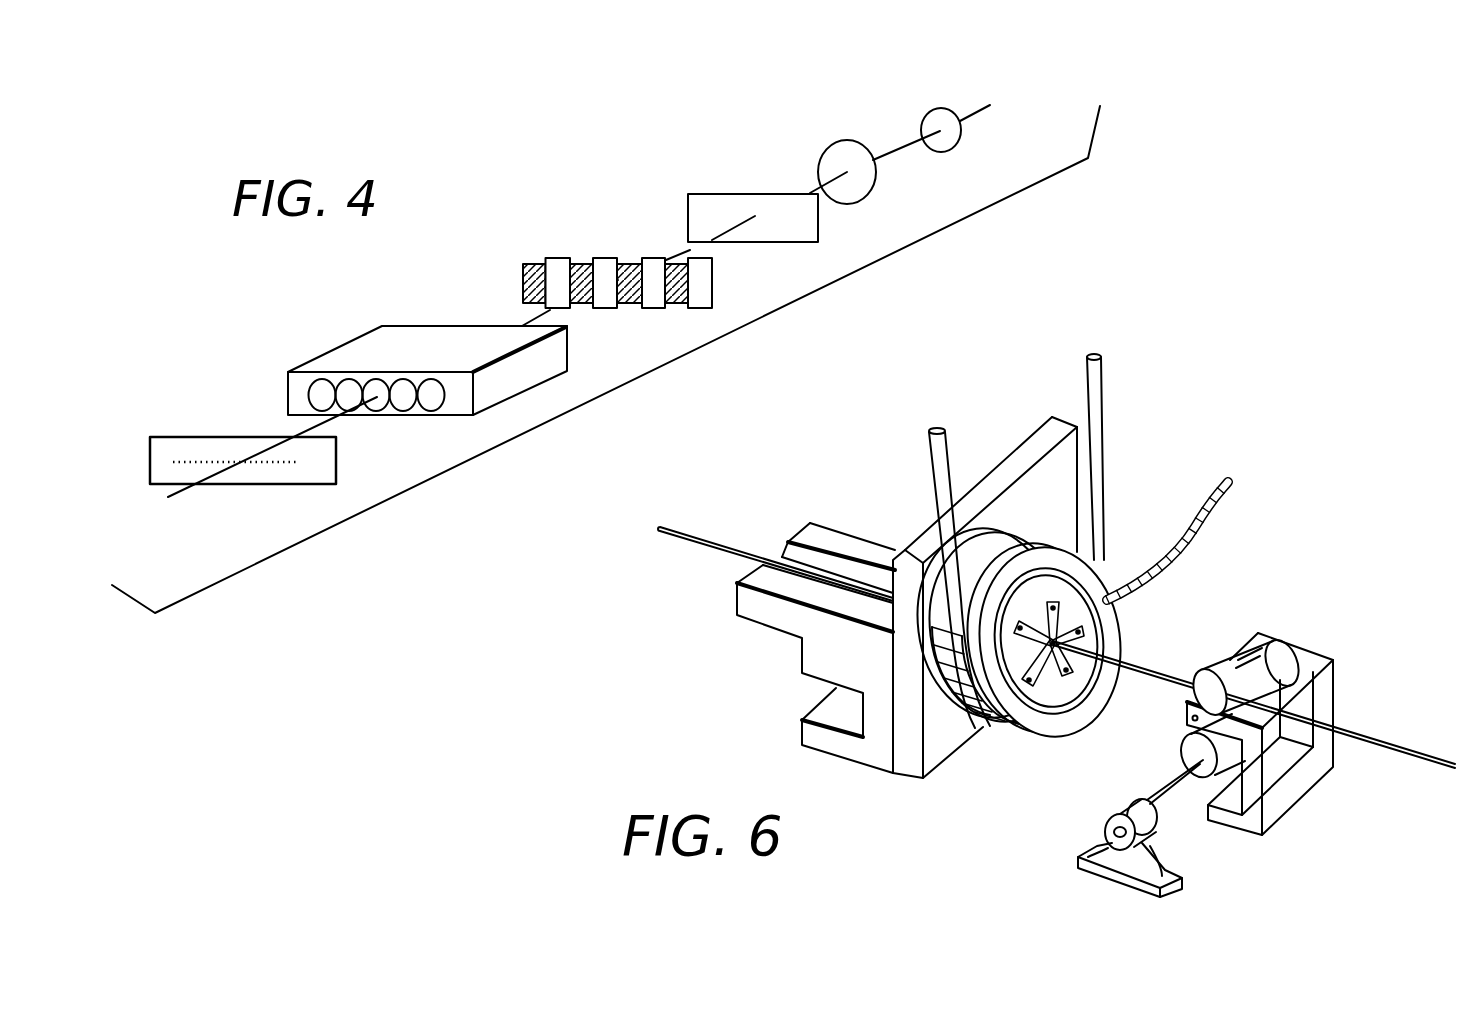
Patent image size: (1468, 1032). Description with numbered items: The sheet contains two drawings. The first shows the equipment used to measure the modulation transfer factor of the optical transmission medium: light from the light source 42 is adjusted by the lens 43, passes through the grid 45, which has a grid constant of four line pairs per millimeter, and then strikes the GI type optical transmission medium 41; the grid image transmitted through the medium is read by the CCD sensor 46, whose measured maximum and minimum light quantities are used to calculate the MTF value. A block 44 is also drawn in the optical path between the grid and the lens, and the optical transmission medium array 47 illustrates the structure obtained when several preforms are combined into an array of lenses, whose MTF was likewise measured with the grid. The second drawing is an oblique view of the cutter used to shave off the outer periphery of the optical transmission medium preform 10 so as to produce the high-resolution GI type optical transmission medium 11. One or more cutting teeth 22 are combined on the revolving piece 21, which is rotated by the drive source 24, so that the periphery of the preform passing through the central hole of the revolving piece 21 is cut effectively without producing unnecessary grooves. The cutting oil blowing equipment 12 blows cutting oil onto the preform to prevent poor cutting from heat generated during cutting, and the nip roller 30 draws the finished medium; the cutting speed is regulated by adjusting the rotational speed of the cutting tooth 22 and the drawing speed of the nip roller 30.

In FIG. 6, the optical transmission medium preform 10 is at (683, 530).
In FIG. 6, the GI type optical transmission medium 11 is at (1447, 757).
In FIG. 6, the cutting oil blowing equipment 12 is at (1132, 605).
In FIG. 6, the revolving piece 21 is at (1108, 580).
In FIG. 6, the cutting tooth 22 is at (1040, 690).
In FIG. 6, the drive source 24 is at (1102, 375).
In FIG. 6, the nip roller 30 is at (1242, 640).
In FIG. 4, the GI type optical transmission medium 41 is at (350, 390).
In FIG. 4, the light source 42 is at (940, 112).
In FIG. 4, the lens 43 is at (845, 160).
In FIG. 4, the light source 44 is at (715, 207).
In FIG. 4, the grid 45 is at (559, 262).
In FIG. 4, the CCD sensor 46 is at (191, 447).
In FIG. 4, the optical transmission medium array 47 is at (435, 335).